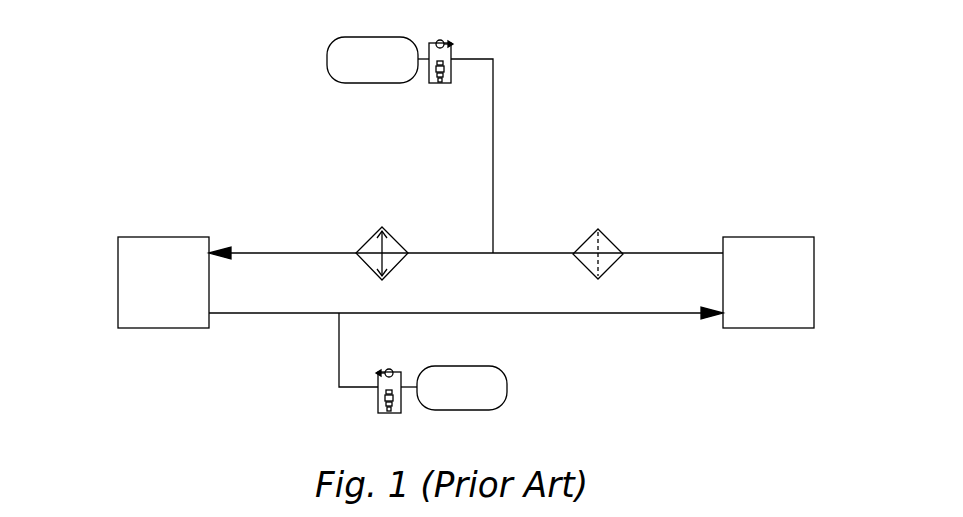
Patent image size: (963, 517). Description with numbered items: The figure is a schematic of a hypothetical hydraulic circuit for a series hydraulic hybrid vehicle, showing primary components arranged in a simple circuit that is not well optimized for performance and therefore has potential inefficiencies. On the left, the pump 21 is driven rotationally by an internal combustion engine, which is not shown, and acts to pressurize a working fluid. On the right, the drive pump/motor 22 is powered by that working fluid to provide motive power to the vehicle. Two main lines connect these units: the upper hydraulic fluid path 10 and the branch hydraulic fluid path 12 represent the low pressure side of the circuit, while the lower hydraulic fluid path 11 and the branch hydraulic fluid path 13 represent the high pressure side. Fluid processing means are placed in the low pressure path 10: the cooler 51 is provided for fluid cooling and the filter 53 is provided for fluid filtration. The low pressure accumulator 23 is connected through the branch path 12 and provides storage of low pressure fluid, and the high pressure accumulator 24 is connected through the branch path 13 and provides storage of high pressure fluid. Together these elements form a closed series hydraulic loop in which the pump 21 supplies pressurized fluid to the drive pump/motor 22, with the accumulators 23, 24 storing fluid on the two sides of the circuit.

The hydraulic fluid path 10 is at (275, 253).
The hydraulic fluid path 11 is at (275, 313).
The hydraulic fluid path 12 is at (493, 180).
The hydraulic fluid path 13 is at (339, 350).
The pump 21 is at (118, 283).
The drive pump/motor 22 is at (814, 281).
The low pressure accumulator 23 is at (327, 65).
The high pressure accumulator 24 is at (507, 388).
The cooler 51 is at (368, 240).
The filter 53 is at (615, 240).